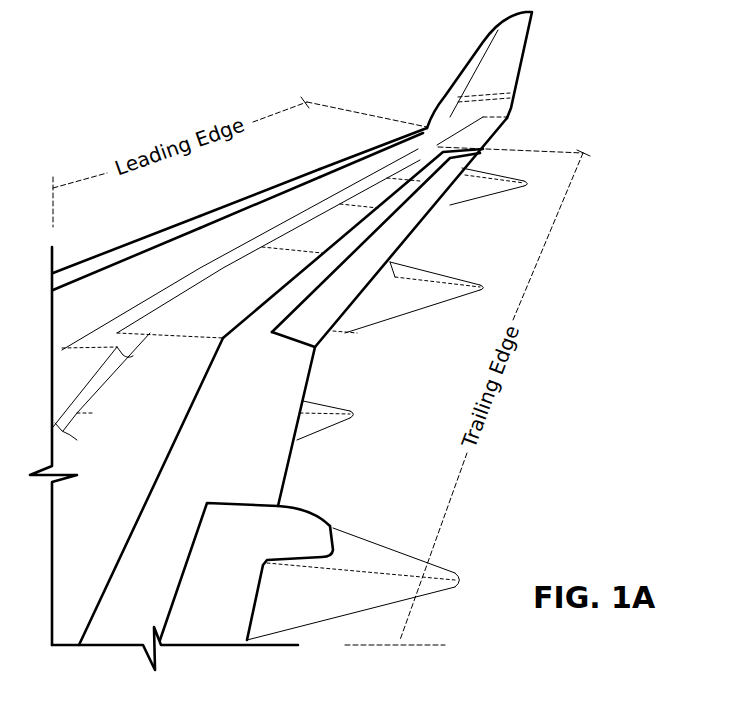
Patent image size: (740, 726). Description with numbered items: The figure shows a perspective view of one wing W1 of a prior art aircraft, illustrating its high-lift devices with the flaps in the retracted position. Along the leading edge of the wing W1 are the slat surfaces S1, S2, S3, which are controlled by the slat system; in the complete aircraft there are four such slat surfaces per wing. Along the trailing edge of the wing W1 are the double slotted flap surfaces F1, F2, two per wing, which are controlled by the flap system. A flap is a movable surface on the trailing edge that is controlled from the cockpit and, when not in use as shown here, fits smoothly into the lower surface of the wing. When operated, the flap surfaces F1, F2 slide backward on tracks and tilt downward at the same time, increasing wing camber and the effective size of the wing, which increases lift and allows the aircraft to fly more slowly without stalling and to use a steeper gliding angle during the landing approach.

The wing W1 is at (549, 91).
The slat surface S1 is at (355, 153).
The slat surface S2 is at (273, 188).
The slat surface S3 is at (132, 248).
The double slotted flap surface F1 is at (412, 233).
The double slotted flap surface F2 is at (317, 528).